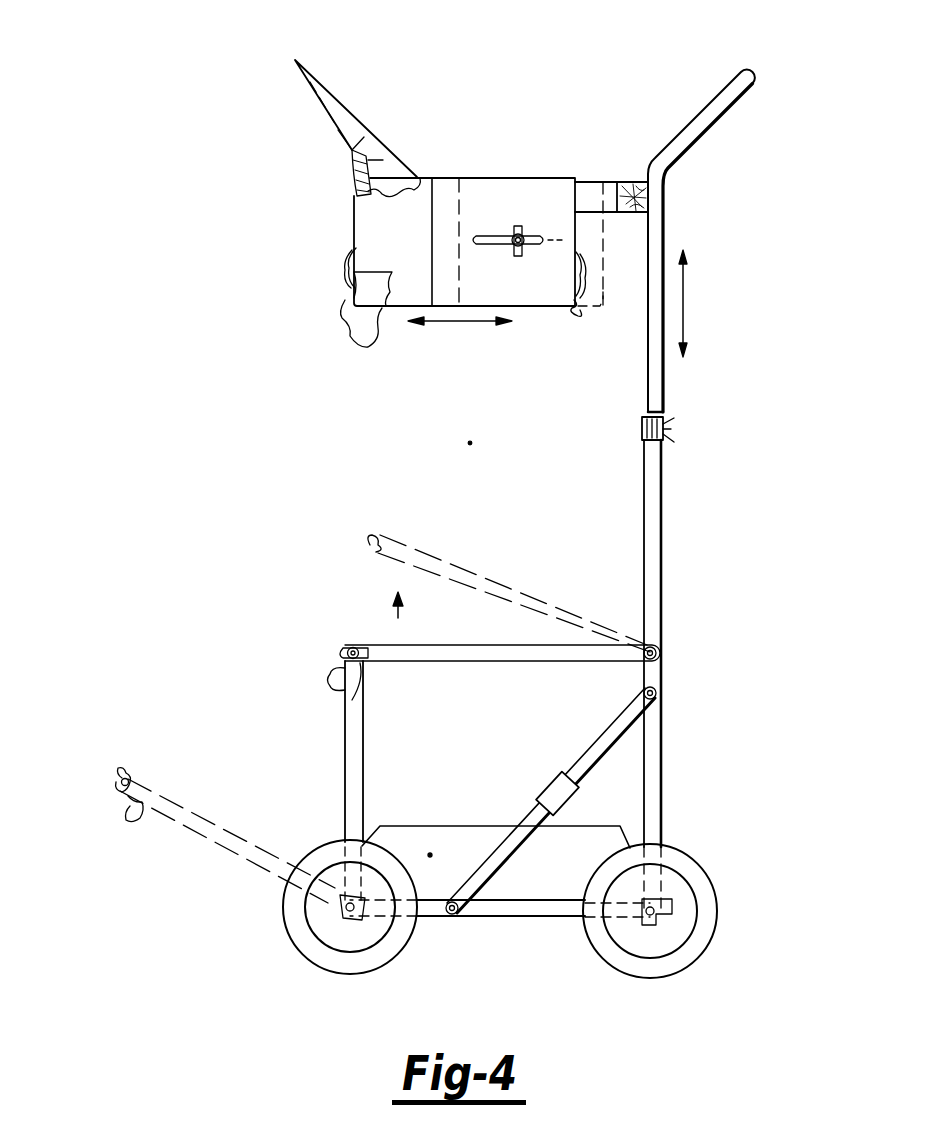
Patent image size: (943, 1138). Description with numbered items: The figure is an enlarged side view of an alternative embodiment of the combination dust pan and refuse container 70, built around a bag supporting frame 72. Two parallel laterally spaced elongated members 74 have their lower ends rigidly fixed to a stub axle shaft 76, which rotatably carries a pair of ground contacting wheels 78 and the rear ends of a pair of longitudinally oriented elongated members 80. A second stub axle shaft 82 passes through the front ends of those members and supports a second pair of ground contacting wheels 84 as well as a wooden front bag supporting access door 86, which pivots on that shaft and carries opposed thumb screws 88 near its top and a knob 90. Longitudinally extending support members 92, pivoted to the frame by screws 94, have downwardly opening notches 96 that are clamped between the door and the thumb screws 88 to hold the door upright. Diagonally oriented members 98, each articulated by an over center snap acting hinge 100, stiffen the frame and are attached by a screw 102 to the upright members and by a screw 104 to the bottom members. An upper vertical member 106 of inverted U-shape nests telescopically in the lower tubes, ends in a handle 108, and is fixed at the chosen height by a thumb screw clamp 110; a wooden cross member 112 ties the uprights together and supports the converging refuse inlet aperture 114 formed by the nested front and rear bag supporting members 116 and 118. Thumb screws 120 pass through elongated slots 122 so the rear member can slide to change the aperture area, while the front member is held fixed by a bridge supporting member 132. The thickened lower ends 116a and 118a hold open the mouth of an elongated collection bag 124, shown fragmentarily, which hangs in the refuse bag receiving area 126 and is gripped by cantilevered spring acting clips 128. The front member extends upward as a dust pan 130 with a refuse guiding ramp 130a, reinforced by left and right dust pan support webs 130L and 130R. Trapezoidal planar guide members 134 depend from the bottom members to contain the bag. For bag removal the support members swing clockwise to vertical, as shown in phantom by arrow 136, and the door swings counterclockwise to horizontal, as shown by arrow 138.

The combination dust pan and refuse container 70 is at (556, 130).
The bag supporting frame 72 is at (662, 565).
The parallel laterally spaced elongated members 74 is at (656, 500).
The stub axle shaft 76 is at (648, 923).
The ground contacting wheels 78 is at (697, 955).
The longitudinally oriented elongated members 80 is at (494, 920).
The second stub axle shaft 82 is at (345, 915).
The second pair of ground contacting wheels 84 is at (288, 914).
The front bag supporting access door 86 is at (362, 765).
The thumb screws 88 is at (345, 652).
The knob 90 is at (330, 680).
The longitudinally extending support members 92 is at (482, 582).
The screws 94 is at (660, 646).
The downwardly opening notches 96 is at (372, 552).
The diagonally oriented members 98 is at (585, 752).
The over center snap acting hinge 100 is at (550, 790).
The screw 102 is at (671, 717).
The screw 104 is at (450, 916).
The upper vertical member 106 is at (650, 374).
The handle 108 is at (722, 122).
The thumb screw clamp 110 is at (668, 428).
The wooden cross member 112 is at (630, 184).
The converging refuse inlet aperture 114 is at (457, 175).
The front bag supporting member 116 is at (365, 217).
The increased wall thickness of front bag supporting member 116a is at (352, 294).
The rear bag supporting member 118 is at (503, 180).
The increased wall thickness of rear bag supporting member 118a is at (578, 320).
The thumb screws 120 is at (519, 246).
The elongated slots 122 is at (480, 244).
The elongated collection bag 124 is at (352, 324).
The refuse bag receiving area 126 is at (472, 443).
The spring acting clips 128 is at (349, 251).
The dust pan 130 is at (306, 93).
The left dust pan support web 130L is at (345, 113).
The right dust pan support web 130R is at (384, 160).
The refuse guiding ramp 130a is at (352, 163).
The bridge supporting member 132 is at (587, 188).
The upstanding planar guide members 134 is at (431, 854).
The arrow 136 is at (398, 618).
The arrow 138 is at (238, 740).